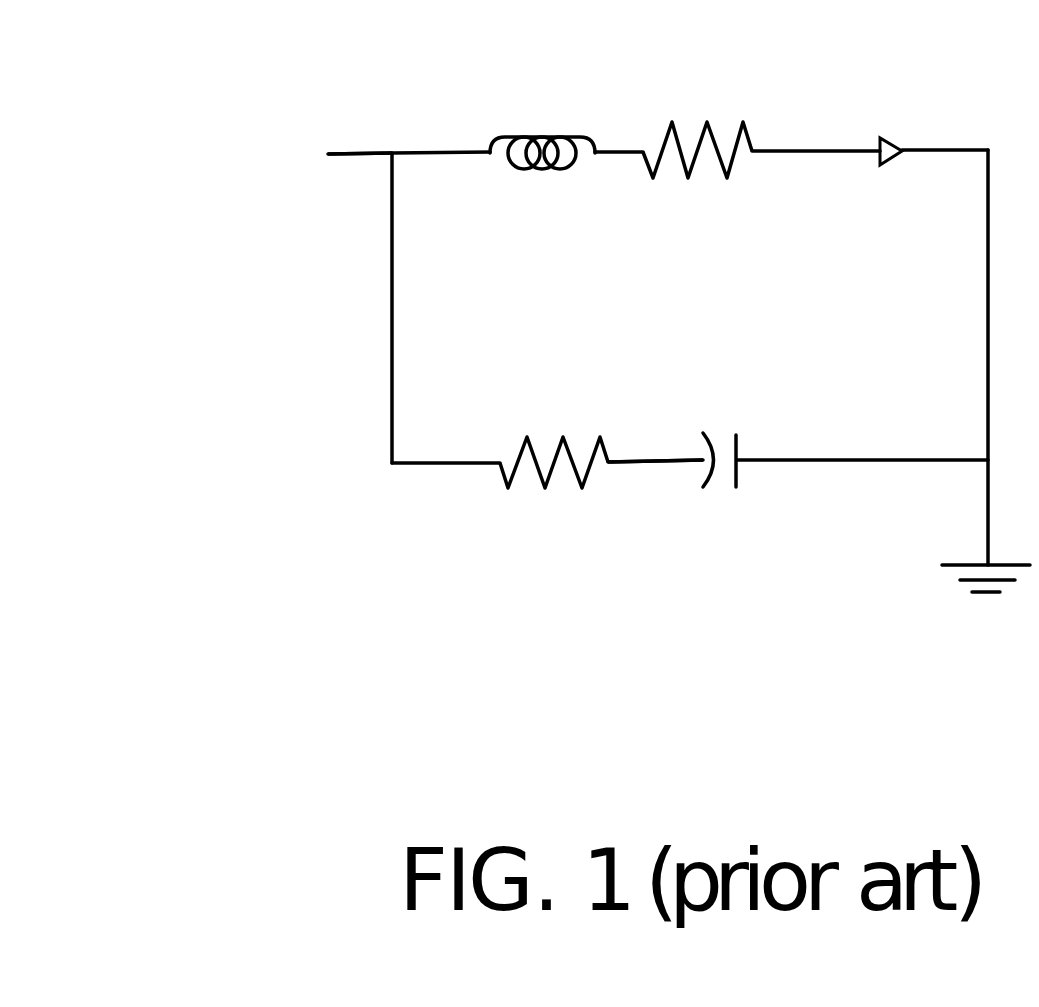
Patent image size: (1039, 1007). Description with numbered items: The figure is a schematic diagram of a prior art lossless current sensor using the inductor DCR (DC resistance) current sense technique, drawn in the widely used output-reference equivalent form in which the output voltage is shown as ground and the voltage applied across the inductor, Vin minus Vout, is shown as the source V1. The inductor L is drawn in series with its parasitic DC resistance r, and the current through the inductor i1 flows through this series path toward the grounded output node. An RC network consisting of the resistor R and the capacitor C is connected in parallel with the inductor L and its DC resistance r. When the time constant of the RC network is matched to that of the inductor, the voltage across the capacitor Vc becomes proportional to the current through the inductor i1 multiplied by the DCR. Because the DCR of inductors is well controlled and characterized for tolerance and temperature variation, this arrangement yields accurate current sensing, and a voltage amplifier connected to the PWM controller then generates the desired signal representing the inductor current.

The voltage applied across the inductor V1 is at (306, 172).
The inductor L is at (542, 102).
The parasitic DC resistance r is at (697, 107).
The current through the inductor i1 is at (869, 118).
The resistor of the RC network R is at (548, 434).
The voltage across the capacitor Vc is at (655, 418).
The capacitor C is at (745, 430).